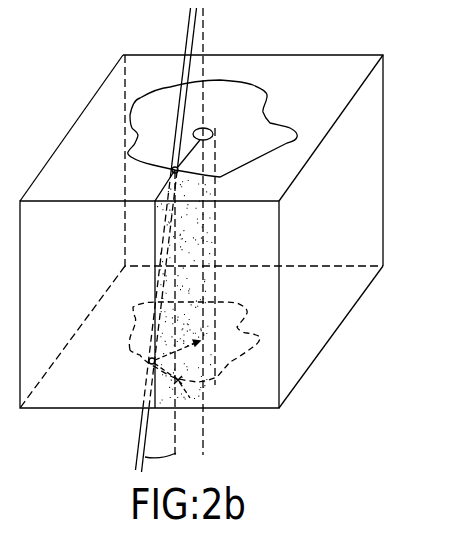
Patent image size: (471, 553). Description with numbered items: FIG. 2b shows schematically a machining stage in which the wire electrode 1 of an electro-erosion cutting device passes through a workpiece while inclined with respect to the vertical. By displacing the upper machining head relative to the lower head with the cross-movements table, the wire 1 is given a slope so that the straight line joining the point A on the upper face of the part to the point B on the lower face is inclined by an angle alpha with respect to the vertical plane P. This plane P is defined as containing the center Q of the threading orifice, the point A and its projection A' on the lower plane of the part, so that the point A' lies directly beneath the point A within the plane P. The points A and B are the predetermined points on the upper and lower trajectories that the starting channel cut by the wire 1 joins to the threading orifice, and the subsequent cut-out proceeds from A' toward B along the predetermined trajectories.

The wire electrode 1 is at (192, 34).
The point A is at (213, 128).
The center of the orifice Q is at (199, 137).
The vertical plane P is at (187, 257).
The point B is at (163, 369).
The projection of point A A' is at (186, 389).